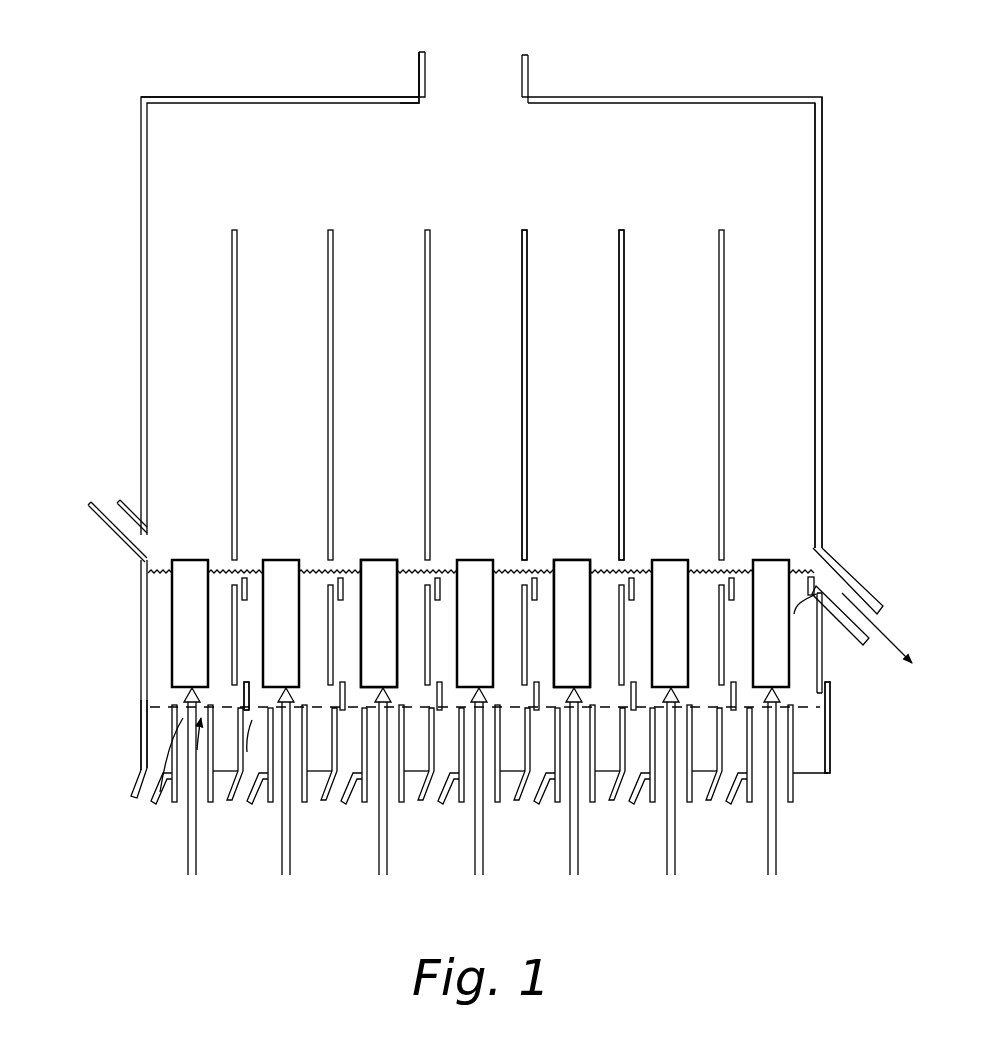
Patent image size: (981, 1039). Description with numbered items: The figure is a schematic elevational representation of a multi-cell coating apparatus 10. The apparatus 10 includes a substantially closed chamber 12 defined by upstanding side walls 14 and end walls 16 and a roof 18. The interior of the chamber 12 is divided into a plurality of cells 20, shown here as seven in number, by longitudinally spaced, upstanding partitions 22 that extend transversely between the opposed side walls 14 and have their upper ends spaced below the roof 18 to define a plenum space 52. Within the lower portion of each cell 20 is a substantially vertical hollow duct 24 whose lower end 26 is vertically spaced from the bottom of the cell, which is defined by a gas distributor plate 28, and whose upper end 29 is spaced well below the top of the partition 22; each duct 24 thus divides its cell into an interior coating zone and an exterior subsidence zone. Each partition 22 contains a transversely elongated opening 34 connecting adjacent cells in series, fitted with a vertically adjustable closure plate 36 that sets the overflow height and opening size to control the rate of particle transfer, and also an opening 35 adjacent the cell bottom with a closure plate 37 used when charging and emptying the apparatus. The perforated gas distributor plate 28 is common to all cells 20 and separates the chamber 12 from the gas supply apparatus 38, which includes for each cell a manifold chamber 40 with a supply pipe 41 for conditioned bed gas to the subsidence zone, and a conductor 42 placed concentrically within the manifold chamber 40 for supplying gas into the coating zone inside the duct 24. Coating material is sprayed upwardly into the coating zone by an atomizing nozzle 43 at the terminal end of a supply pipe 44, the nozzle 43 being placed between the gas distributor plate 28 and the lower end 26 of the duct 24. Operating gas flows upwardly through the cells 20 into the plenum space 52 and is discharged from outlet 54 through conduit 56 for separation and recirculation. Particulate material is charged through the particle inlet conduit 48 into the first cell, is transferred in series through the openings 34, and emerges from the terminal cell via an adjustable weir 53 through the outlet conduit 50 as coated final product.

The coating apparatus 10 is at (240, 76).
The chamber 12 is at (725, 117).
The side walls 14 is at (800, 128).
The end walls 16 is at (824, 197).
The roof 18 is at (337, 97).
The cells 20 is at (578, 242).
The partitions 22 is at (318, 310).
The duct 24 is at (381, 576).
The lower end 26 is at (562, 695).
The gas distributor plate 28 is at (810, 713).
The upper end 29 is at (377, 558).
The opening 34 is at (228, 566).
The opening 35 is at (243, 693).
The closure plate 36 is at (246, 590).
The closure plate 37 is at (263, 690).
The gas supply apparatus 38 is at (138, 736).
The manifold chamber 40 is at (803, 762).
The supply pipe 41 is at (140, 778).
The conductor 42 is at (215, 800).
The atomizing nozzle 43 is at (181, 698).
The supply pipe 44 is at (185, 877).
The particle inlet conduit 48 is at (106, 502).
The outlet conduit 50 is at (863, 585).
The plenum space 52 is at (345, 170).
The adjustable weir 53 is at (818, 633).
The outlet 54 is at (505, 100).
The conduit 56 is at (534, 71).